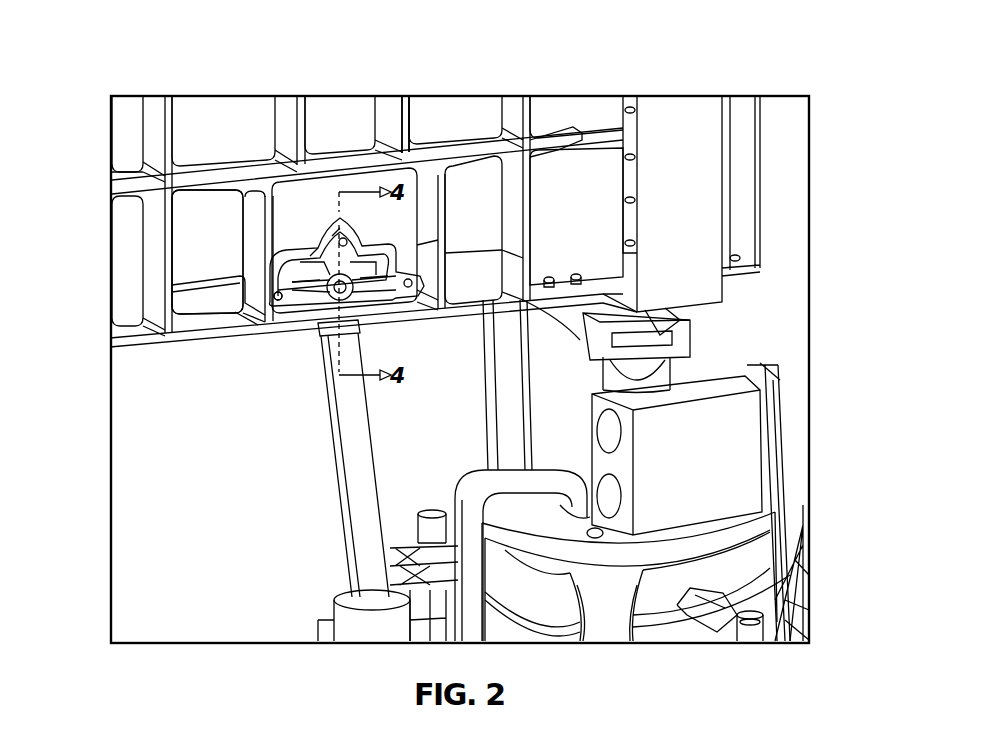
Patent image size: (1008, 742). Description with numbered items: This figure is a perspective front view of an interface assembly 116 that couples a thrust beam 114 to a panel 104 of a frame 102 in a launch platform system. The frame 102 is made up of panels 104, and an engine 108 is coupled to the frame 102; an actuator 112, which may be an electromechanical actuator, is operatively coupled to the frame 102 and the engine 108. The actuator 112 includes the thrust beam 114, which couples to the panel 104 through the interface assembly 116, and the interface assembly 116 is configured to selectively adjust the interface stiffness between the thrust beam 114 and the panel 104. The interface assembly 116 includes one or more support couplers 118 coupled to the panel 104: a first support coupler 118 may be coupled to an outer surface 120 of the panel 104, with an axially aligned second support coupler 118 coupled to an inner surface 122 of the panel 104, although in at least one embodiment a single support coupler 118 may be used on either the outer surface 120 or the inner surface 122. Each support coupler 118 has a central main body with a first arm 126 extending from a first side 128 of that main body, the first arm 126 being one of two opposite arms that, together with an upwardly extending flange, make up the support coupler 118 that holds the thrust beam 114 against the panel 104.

The frame 102 is at (338, 88).
The panel 104 is at (412, 125).
The engine 108 is at (728, 448).
The actuator 112 is at (325, 570).
The thrust beam 114 is at (340, 505).
The interface assembly 116 is at (305, 300).
The support coupler 118 is at (278, 298).
The outer surface 120 is at (215, 300).
The inner surface 122 is at (192, 96).
The first arm 126 is at (293, 282).
The first side 128 is at (390, 294).